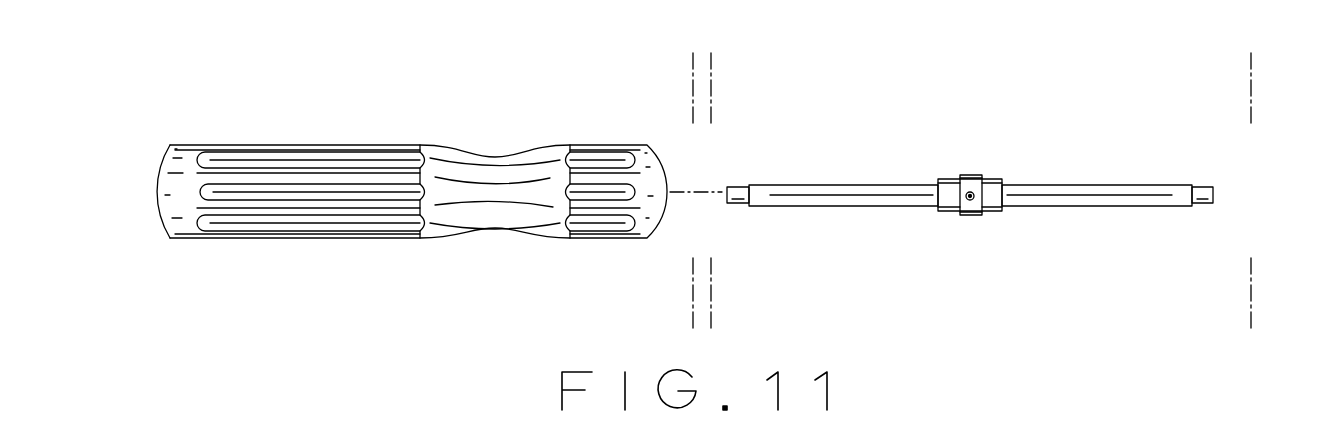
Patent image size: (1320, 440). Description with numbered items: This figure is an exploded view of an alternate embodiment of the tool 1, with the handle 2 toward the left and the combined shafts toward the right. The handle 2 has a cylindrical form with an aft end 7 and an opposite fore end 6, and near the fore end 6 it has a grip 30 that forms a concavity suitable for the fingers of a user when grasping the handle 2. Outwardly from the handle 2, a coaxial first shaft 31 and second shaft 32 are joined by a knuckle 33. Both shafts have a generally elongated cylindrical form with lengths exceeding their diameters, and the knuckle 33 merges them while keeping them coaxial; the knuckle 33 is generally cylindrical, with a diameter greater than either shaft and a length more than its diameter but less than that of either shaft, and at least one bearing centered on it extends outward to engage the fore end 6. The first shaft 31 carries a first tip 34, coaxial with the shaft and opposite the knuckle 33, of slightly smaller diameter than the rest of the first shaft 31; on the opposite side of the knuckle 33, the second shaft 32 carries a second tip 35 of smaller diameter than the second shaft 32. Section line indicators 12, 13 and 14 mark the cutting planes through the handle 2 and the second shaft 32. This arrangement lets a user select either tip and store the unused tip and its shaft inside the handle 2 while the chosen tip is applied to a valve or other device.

The screwdriver tool 1 is at (300, 112).
The handle 2 is at (397, 143).
The fore end 6 is at (657, 155).
The aft end 7 is at (152, 192).
The grip 30 is at (488, 157).
The first shaft 31 is at (903, 184).
The second shaft 32 is at (1112, 184).
The knuckle 33 is at (971, 175).
The first tip 34 is at (737, 186).
The second tip 35 is at (1207, 186).
The section line 12- 12 is at (658, 330).
The section line 13- 13 is at (749, 330).
The section line 14- 14 is at (1216, 330).